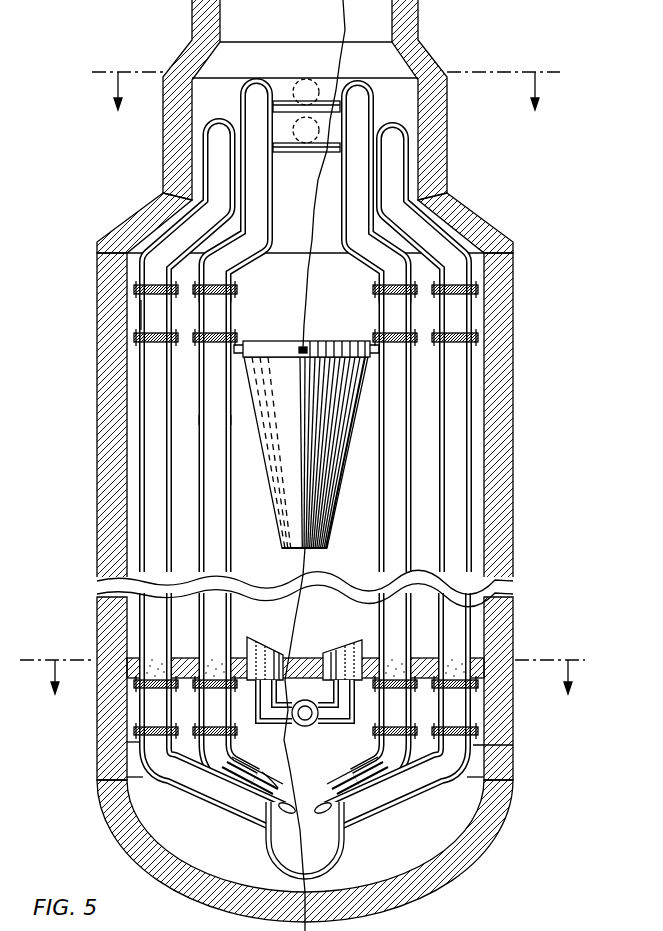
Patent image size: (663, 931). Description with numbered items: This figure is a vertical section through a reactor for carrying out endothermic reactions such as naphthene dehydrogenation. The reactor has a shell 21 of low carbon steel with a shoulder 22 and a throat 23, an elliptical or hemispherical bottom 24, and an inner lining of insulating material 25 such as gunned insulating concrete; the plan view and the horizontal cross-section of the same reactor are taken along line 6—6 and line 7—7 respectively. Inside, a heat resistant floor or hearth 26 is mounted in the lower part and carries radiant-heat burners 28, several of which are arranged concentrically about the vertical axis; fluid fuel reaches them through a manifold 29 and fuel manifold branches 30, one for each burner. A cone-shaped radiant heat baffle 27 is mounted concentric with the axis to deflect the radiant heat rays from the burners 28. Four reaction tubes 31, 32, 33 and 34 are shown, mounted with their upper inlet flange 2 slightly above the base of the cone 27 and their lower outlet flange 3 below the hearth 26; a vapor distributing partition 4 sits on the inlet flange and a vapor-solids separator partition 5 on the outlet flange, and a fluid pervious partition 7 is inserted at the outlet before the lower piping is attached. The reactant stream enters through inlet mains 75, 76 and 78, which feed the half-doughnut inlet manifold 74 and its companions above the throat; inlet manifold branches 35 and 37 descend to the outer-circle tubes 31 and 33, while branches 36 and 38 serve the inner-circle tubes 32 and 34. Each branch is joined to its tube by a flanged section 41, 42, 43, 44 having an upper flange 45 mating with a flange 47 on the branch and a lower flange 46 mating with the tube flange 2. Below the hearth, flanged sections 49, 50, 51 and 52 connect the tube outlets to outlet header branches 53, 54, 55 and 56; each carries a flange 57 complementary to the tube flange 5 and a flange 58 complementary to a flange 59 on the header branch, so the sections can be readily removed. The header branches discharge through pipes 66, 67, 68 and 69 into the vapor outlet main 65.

The flange 2 is at (140, 340).
The flange 3 is at (133, 684).
The vapor distributing partition 4 is at (135, 337).
The vapor-solids separator partition 5 is at (135, 689).
The section line 6— 6 is at (324, 92).
The fluid pervious partition 7 is at (304, 679).
The shell 21 is at (513, 631).
The shoulder 22 is at (475, 207).
The throat 23 is at (452, 126).
The bottom 24 is at (443, 873).
The layer of insulating material 25 is at (495, 545).
The floor or hearth 26 is at (418, 660).
The radiant heat baffle 27 is at (331, 541).
The burners 28 is at (249, 638).
The manifold 29 is at (305, 727).
The fuel manifold branches 30 is at (273, 724).
The reaction tube 31 is at (140, 403).
The reaction tube 32 is at (230, 520).
The reaction tube 33 is at (440, 465).
The reaction tube 34 is at (379, 465).
The manifold branch 35 is at (237, 217).
The manifold branch 36 is at (273, 214).
The manifold branch 37 is at (408, 182).
The manifold branch 38 is at (345, 236).
The flanged section 41 is at (142, 307).
The flanged section 42 is at (232, 313).
The flanged section 43 is at (473, 312).
The flanged section 44 is at (382, 310).
The upper flange 45 is at (146, 291).
The lower flange 46 is at (139, 333).
The flange 47 is at (148, 284).
The flanged section 49 is at (135, 710).
The flanged section 50 is at (230, 720).
The flanged section 51 is at (480, 716).
The flanged section 52 is at (382, 705).
The outlet header branch 53 is at (146, 778).
The outlet header branch 54 is at (212, 763).
The outlet header branch 55 is at (458, 776).
The outlet header branch 56 is at (400, 764).
The flange 57 is at (134, 690).
The flange 58 is at (170, 726).
The flange 59 is at (128, 741).
The vapor outlet main 65 is at (343, 857).
The pipe 66 is at (265, 773).
The pipe 67 is at (228, 813).
The pipe 68 is at (373, 794).
The pipe 69 is at (413, 798).
The half-doughnut inlet manifold 74 is at (258, 78).
The inlet main 75 is at (297, 151).
The inlet main 76 is at (315, 156).
The inlet main 78 is at (310, 79).